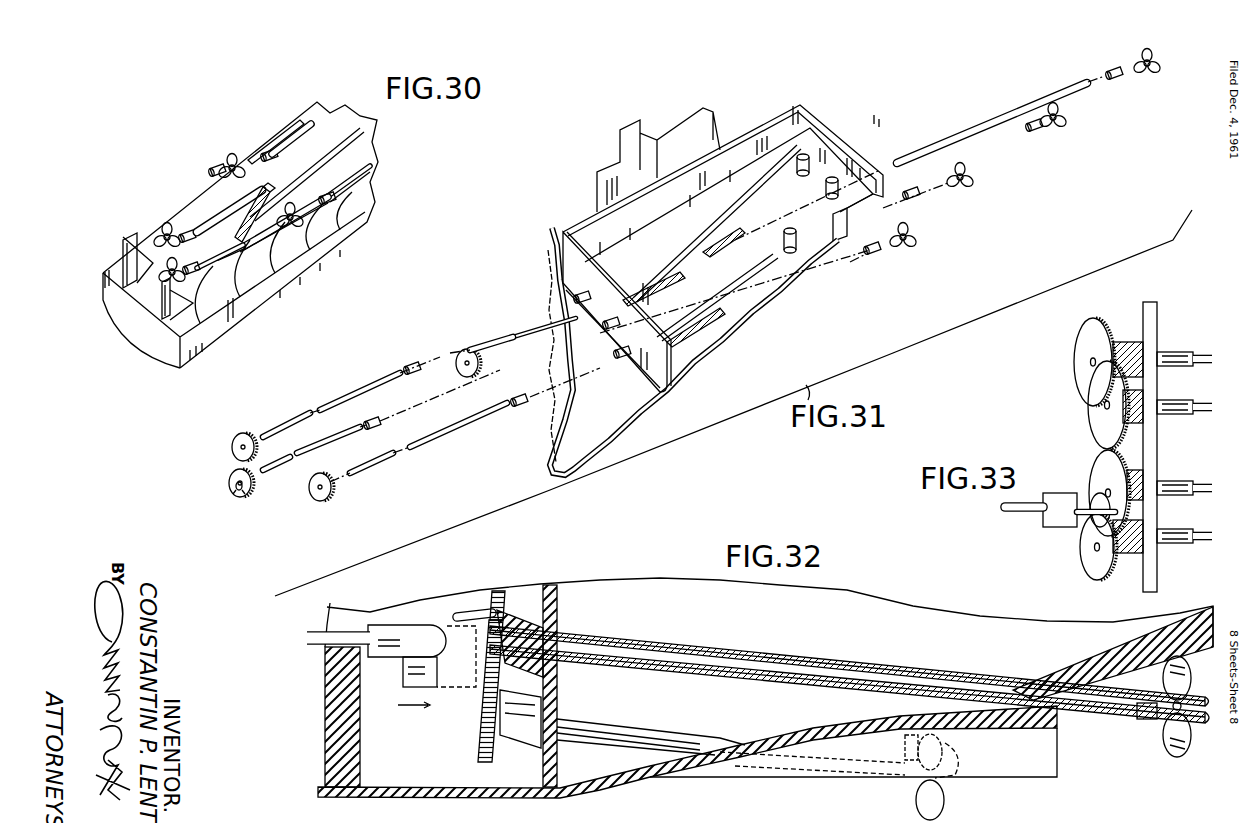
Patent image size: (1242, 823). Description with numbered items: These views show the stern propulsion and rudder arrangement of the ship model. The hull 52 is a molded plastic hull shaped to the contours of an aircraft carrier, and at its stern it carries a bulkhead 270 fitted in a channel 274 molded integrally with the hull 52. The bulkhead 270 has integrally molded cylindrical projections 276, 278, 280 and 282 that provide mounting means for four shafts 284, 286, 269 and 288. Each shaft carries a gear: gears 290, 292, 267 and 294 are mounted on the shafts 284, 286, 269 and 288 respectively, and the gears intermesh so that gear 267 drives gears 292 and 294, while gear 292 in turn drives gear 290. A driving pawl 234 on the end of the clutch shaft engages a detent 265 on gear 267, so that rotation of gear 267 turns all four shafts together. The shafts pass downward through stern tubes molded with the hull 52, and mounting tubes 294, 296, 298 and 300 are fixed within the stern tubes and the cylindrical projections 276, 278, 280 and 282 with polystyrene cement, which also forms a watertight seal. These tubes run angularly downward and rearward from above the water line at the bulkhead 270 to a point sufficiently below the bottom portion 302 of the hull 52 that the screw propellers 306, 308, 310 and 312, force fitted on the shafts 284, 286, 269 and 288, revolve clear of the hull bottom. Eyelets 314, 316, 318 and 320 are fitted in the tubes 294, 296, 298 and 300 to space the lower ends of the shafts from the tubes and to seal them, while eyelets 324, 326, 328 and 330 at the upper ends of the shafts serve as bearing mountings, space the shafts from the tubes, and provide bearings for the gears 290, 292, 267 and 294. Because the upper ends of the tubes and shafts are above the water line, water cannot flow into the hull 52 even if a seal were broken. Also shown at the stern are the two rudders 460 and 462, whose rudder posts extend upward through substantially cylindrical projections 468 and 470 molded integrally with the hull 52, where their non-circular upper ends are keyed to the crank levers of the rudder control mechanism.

In FIG. 30, the hull 52 is at (200, 357).
In FIG. 31, the hull 52 is at (844, 145).
In FIG. 32, the hull 52 is at (826, 724).
In FIG. 33, the driving pawl 234 is at (1087, 493).
In FIG. 32, the driving pawl 234 is at (402, 690).
In FIG. 31, the detent 265 is at (235, 497).
In FIG. 33, the detent 265 is at (1087, 528).
In FIG. 32, the detent 265 is at (471, 611).
In FIG. 31, the gear 267 is at (247, 493).
In FIG. 33, the gear 267 is at (1103, 457).
In FIG. 32, the gear 267 is at (500, 590).
In FIG. 33, the shaft 269 is at (1197, 481).
In FIG. 32, the shaft 269 is at (623, 640).
In FIG. 31, the bulkhead 270 is at (590, 266).
In FIG. 33, the bulkhead 270 is at (1153, 317).
In FIG. 31, the channel 274 is at (558, 242).
In FIG. 31, the cylindrical projection 276 is at (585, 345).
In FIG. 31, the cylindrical projection 278 is at (575, 295).
In FIG. 31, the cylindrical projection 280 is at (648, 318).
In FIG. 31, the cylindrical projection 282 is at (630, 368).
In FIG. 33, the shaft 284 is at (1203, 352).
In FIG. 30, the shaft 286 is at (370, 180).
In FIG. 33, the shaft 286 is at (1205, 393).
In FIG. 30, the shaft 288 is at (266, 296).
In FIG. 33, the shaft 288 is at (1197, 530).
In FIG. 30, the gear 290 is at (240, 197).
In FIG. 31, the gear 290 is at (470, 378).
In FIG. 33, the gear 290 is at (1077, 338).
In FIG. 32, the gear 290 is at (478, 745).
In FIG. 30, the gear 292 is at (297, 118).
In FIG. 31, the gear 292 is at (232, 447).
In FIG. 33, the gear 292 is at (1090, 395).
In FIG. 30, the gear 294 is at (348, 246).
In FIG. 31, the gear 294 is at (325, 500).
In FIG. 33, the gear 294 is at (1100, 557).
In FIG. 30, the mounting tube 296 is at (258, 300).
In FIG. 31, the mounting tube 296 is at (634, 298).
In FIG. 32, the mounting tube 296 is at (887, 777).
In FIG. 30, the mounting tube 298 is at (220, 229).
In FIG. 31, the mounting tube 298 is at (730, 276).
In FIG. 32, the mounting tube 298 is at (732, 652).
In FIG. 30, the mounting tube 300 is at (265, 148).
In FIG. 31, the mounting tube 300 is at (690, 336).
In FIG. 32, the bottom portion of the hull 302 is at (750, 745).
In FIG. 30, the screw propeller 306 is at (318, 265).
In FIG. 31, the screw propeller 306 is at (1158, 60).
In FIG. 30, the screw propeller 308 is at (162, 306).
In FIG. 31, the screw propeller 308 is at (1068, 123).
In FIG. 32, the screw propeller 308 is at (1170, 752).
In FIG. 30, the screw propeller 310 is at (160, 226).
In FIG. 31, the screw propeller 310 is at (974, 178).
In FIG. 32, the screw propeller 310 is at (945, 805).
In FIG. 30, the screw propeller 312 is at (222, 166).
In FIG. 31, the screw propeller 312 is at (916, 242).
In FIG. 30, the eyelet 314 is at (323, 198).
In FIG. 31, the eyelet 314 is at (1113, 66).
In FIG. 30, the eyelet 316 is at (222, 325).
In FIG. 31, the eyelet 316 is at (1038, 131).
In FIG. 32, the eyelet 316 is at (1150, 703).
In FIG. 30, the eyelet 318 is at (193, 226).
In FIG. 31, the eyelet 318 is at (916, 199).
In FIG. 32, the eyelet 318 is at (910, 762).
In FIG. 30, the eyelet 320 is at (221, 164).
In FIG. 31, the eyelet 320 is at (875, 256).
In FIG. 31, the eyelet 324 is at (415, 362).
In FIG. 31, the eyelet 326 is at (522, 338).
In FIG. 31, the eyelet 328 is at (381, 425).
In FIG. 32, the eyelet 328 is at (513, 618).
In FIG. 31, the eyelet 330 is at (521, 408).
In FIG. 30, the rudder 460 is at (172, 350).
In FIG. 30, the rudder 462 is at (121, 251).
In FIG. 31, the cylindrical projection 468 is at (796, 173).
In FIG. 31, the cylindrical projection 470 is at (826, 189).